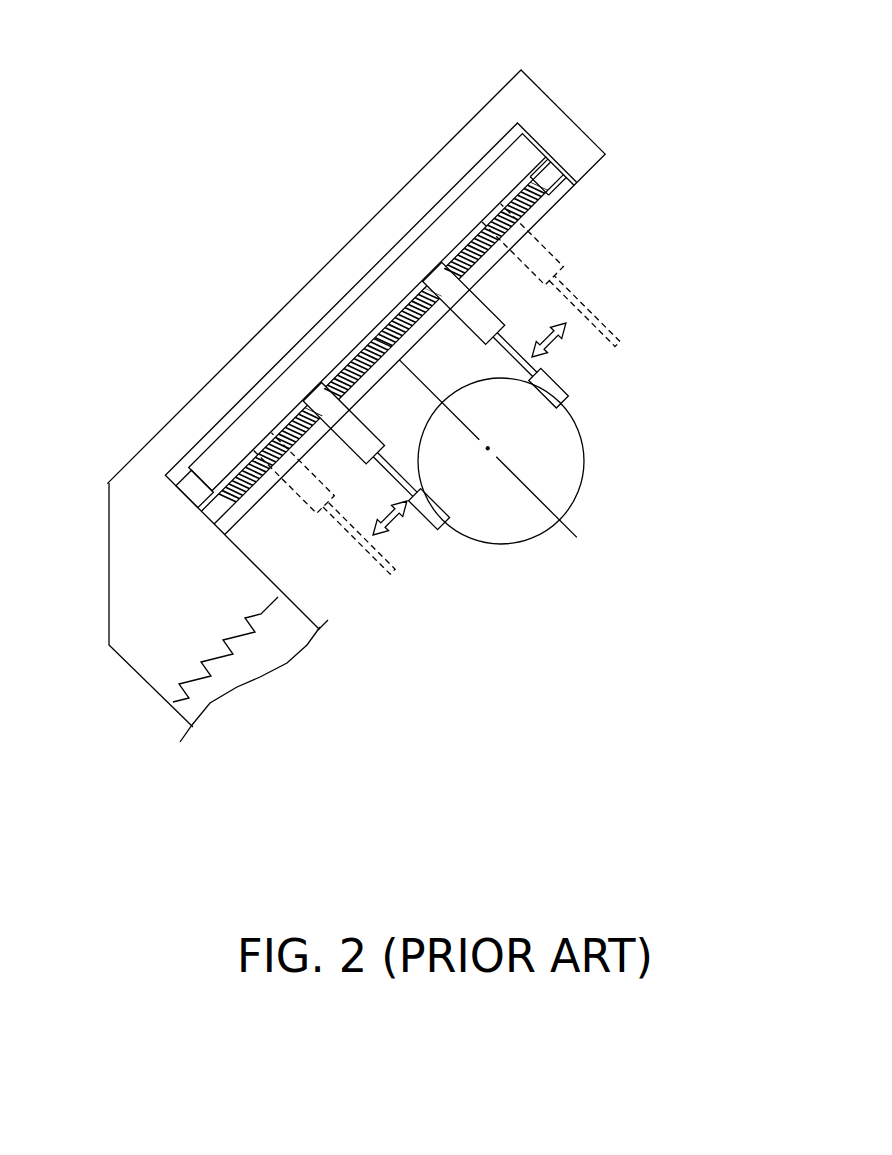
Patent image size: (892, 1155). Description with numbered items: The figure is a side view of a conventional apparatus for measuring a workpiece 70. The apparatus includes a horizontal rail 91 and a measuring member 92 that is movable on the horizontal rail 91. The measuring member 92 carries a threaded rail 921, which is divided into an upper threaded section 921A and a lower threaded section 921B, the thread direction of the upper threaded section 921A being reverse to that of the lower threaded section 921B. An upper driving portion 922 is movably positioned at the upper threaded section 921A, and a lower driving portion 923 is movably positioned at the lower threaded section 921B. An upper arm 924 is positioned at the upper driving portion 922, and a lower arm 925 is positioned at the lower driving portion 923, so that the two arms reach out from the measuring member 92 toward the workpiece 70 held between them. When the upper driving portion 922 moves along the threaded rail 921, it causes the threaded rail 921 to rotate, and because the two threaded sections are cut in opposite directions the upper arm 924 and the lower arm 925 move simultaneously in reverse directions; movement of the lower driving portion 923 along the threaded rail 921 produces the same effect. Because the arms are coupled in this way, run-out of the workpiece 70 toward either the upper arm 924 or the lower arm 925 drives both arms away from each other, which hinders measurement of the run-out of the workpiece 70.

The measuring member 92 is at (490, 117).
The horizontal rail 91 is at (260, 660).
The threaded rail 921 is at (383, 333).
The upper threaded section 921A is at (408, 312).
The lower threaded section 921B is at (340, 393).
The upper driving portion 922 is at (450, 287).
The lower driving portion 923 is at (320, 408).
The upper arm 924 is at (540, 376).
The lower arm 925 is at (432, 516).
The workpiece 70 is at (573, 475).